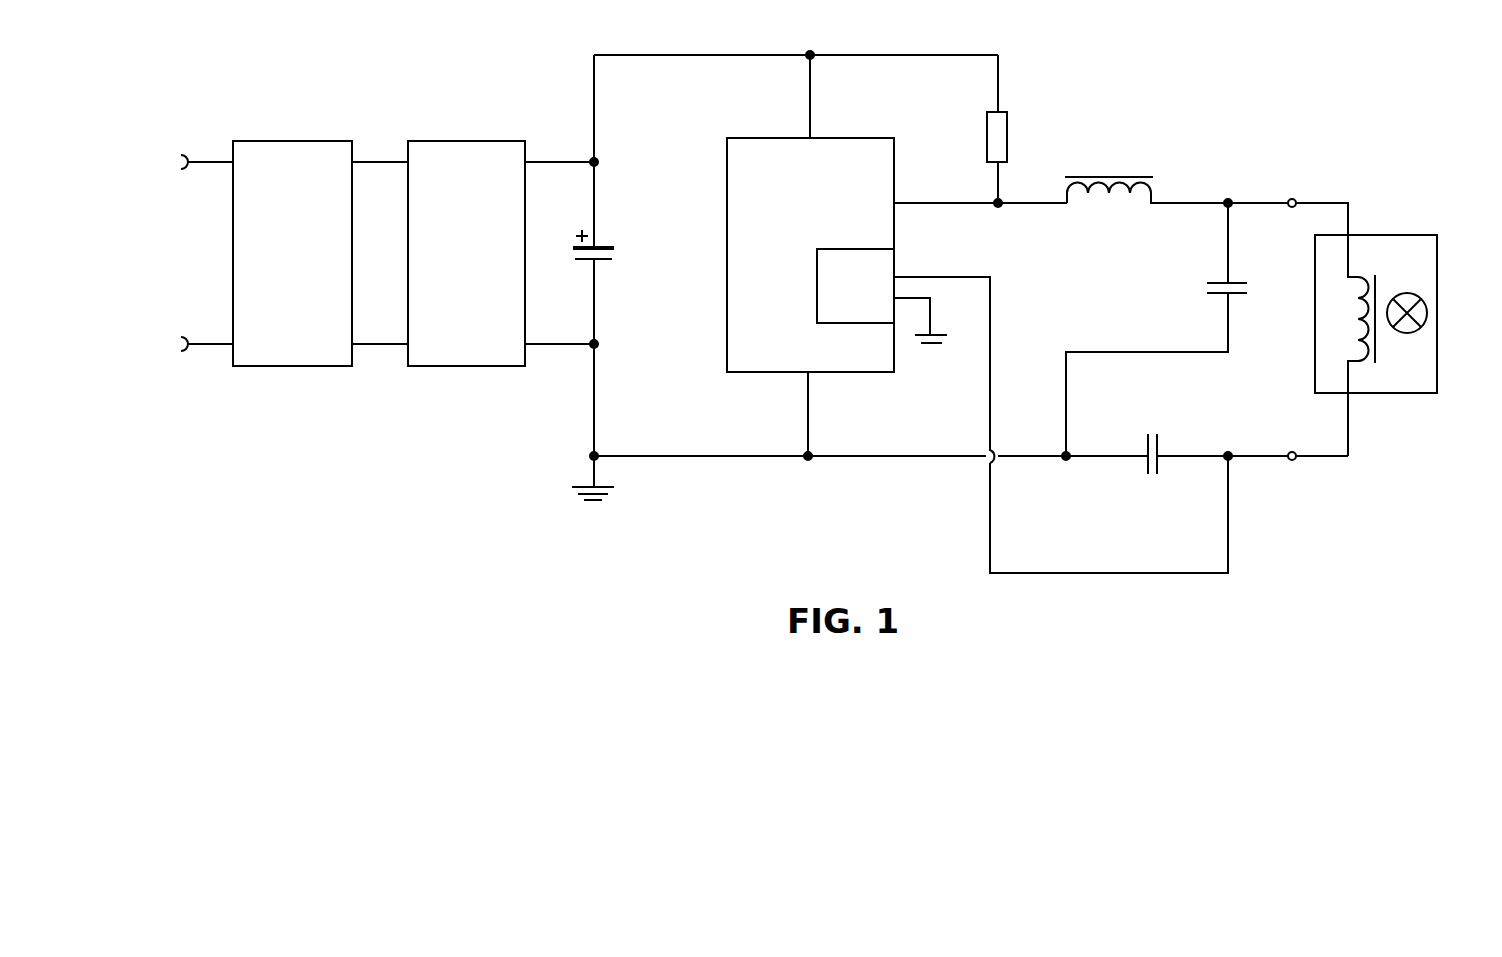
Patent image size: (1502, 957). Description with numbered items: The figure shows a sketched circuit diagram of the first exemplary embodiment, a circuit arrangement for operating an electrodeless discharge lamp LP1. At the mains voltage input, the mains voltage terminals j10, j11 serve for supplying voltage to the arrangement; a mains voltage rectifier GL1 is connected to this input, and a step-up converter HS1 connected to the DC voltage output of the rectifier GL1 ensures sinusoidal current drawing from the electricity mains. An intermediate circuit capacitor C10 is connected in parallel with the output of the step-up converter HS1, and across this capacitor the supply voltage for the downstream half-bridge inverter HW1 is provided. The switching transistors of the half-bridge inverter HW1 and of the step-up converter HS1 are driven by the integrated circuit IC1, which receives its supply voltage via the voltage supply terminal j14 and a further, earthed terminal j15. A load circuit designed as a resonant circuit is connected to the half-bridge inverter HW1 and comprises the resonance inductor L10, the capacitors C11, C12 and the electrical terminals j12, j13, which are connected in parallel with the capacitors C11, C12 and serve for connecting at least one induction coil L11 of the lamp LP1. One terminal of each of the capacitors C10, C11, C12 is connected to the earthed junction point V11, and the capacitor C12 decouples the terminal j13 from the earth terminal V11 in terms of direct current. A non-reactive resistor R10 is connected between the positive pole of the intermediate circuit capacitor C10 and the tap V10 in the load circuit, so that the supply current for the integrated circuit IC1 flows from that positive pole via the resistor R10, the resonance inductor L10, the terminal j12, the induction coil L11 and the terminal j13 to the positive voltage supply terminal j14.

The mains voltage terminal j10 is at (202, 146).
The mains voltage terminal j11 is at (197, 363).
The mains voltage rectifier GL1 is at (320, 253).
The step-up converter HS1 is at (501, 253).
The intermediate circuit capacitor C10 is at (616, 258).
The earthed junction point V11 is at (580, 472).
The half-bridge inverter HW1 is at (897, 255).
The integrated circuit IC1 is at (855, 286).
The voltage supply terminal j14 is at (944, 356).
The earthed terminal j15 is at (920, 320).
The non-reactive resistor R10 is at (1027, 129).
The tap V10 is at (1004, 225).
The resonance inductor L10 is at (1176, 175).
The electrical terminal j12 is at (1312, 204).
The capacitor C11 is at (1179, 329).
The capacitor C12 is at (1160, 474).
The electrical terminal j13 is at (1313, 444).
The electrodeless discharge lamp LP1 is at (1402, 314).
The induction coil L11 is at (1360, 361).